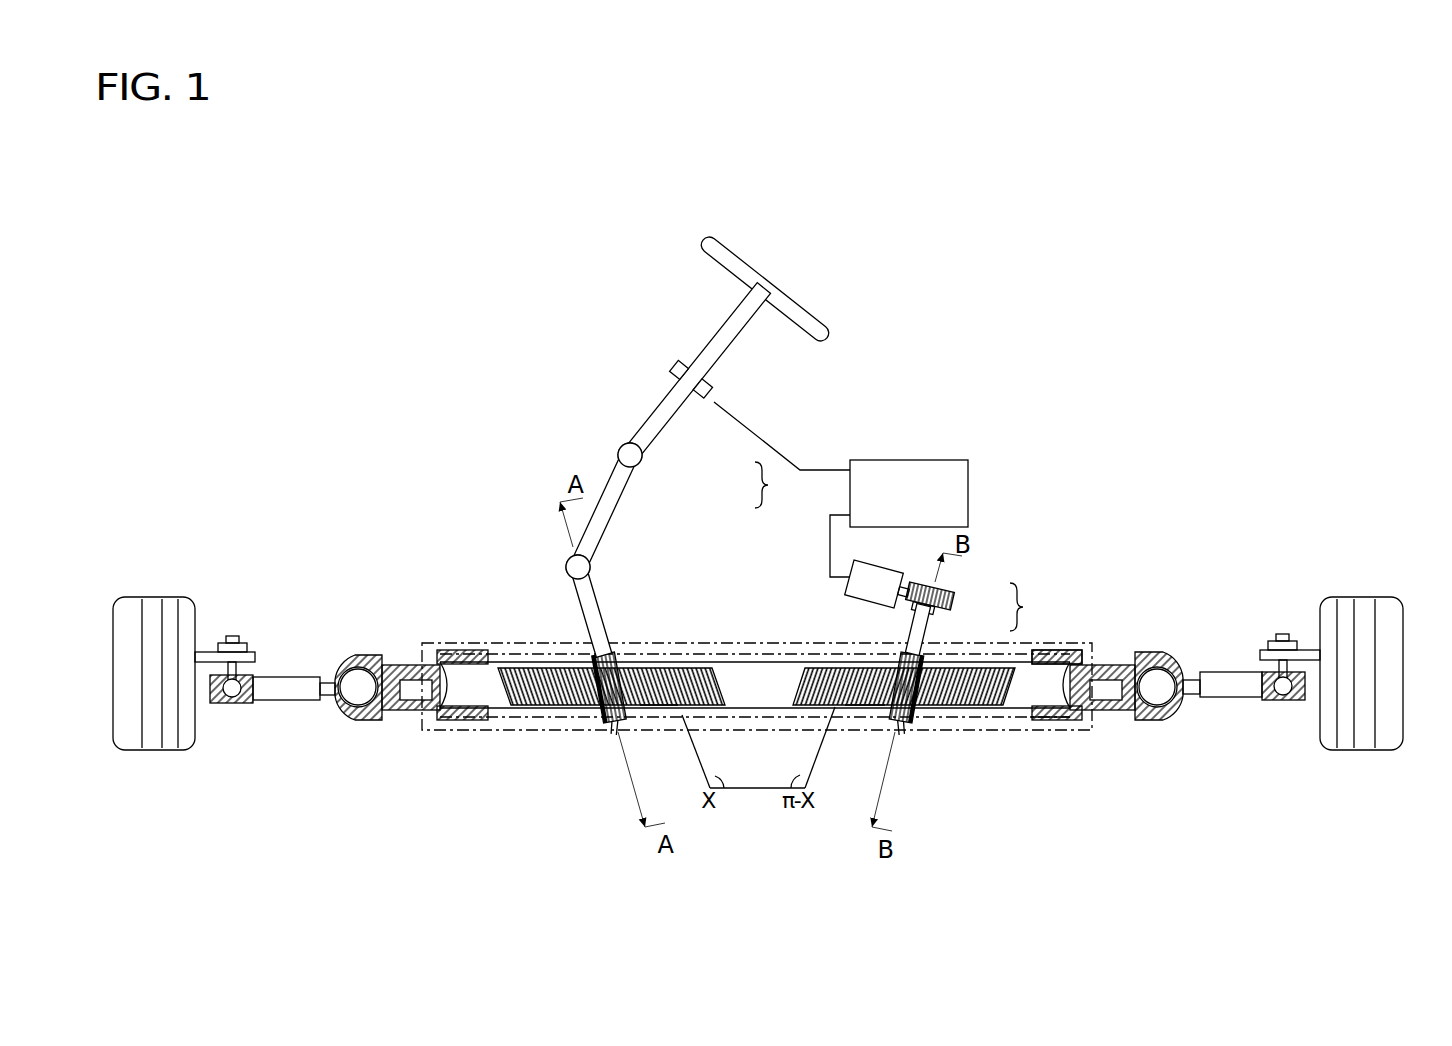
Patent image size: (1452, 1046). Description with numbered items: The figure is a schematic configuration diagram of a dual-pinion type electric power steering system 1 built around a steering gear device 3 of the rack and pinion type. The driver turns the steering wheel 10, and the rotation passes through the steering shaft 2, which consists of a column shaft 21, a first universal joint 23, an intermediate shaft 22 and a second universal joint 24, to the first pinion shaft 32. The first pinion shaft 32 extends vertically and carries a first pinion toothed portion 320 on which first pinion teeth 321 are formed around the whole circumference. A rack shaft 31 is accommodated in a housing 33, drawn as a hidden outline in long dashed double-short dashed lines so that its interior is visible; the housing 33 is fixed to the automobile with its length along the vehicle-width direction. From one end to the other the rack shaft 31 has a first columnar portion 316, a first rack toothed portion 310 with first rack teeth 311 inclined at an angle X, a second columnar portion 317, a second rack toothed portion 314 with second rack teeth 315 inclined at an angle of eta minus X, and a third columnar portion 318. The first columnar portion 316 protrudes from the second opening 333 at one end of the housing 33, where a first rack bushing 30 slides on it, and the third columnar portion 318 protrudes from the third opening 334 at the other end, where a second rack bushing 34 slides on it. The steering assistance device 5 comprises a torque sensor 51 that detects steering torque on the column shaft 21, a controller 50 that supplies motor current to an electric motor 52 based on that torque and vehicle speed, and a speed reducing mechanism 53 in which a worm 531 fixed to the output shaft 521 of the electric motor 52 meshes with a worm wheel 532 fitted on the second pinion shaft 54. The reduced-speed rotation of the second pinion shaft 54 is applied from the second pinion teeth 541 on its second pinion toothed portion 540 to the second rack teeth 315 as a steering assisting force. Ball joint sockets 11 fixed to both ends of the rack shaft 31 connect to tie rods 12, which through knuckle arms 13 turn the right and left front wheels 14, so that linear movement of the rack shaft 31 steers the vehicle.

The dual-pinion type electric power steering system 1 is at (911, 333).
The steering shaft 2 is at (769, 485).
The steering gear device 3 is at (1066, 588).
The steering assistance device 5 is at (818, 558).
The steering wheel 10 is at (808, 318).
The ball joint socket 11 is at (348, 656).
The tie rod 12 is at (292, 702).
The knuckle arm 13 is at (204, 652).
The front wheel 14 is at (152, 598).
The column shaft 21 is at (680, 415).
The intermediate shaft 22 is at (615, 510).
The first universal joint 23 is at (620, 452).
The second universal joint 24 is at (566, 568).
The first rack bushing 30 is at (458, 650).
The rack shaft 31 is at (716, 661).
The first pinion shaft 32 is at (598, 588).
The housing 33 is at (972, 737).
The second rack bushing 34 is at (1080, 648).
The controller 50 is at (874, 460).
The torque sensor 51 is at (718, 394).
The electric motor 52 is at (880, 568).
The speed reducing mechanism 53 is at (1030, 607).
The second pinion shaft 54 is at (908, 637).
The first rack toothed portion 310 is at (712, 718).
The first rack teeth 311 is at (675, 710).
The second rack toothed portion 314 is at (805, 718).
The second rack teeth 315 is at (880, 712).
The first columnar portion 316 is at (503, 692).
The second columnar portion 317 is at (762, 688).
The third columnar portion 318 is at (1022, 700).
The first pinion toothed portion 320 is at (628, 648).
The first pinion teeth 321 is at (604, 724).
The second opening 333 is at (416, 714).
The third opening 334 is at (1096, 714).
The output shaft 521 is at (910, 605).
The worm 531 is at (936, 608).
The worm wheel 532 is at (955, 597).
The second pinion toothed portion 540 is at (938, 657).
The second pinion teeth 541 is at (907, 726).